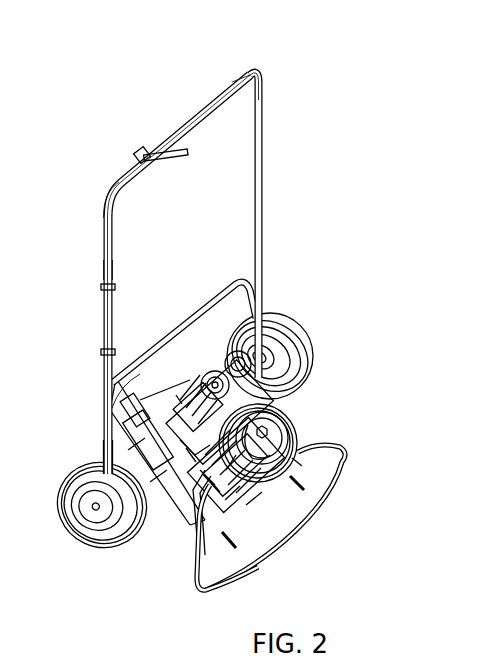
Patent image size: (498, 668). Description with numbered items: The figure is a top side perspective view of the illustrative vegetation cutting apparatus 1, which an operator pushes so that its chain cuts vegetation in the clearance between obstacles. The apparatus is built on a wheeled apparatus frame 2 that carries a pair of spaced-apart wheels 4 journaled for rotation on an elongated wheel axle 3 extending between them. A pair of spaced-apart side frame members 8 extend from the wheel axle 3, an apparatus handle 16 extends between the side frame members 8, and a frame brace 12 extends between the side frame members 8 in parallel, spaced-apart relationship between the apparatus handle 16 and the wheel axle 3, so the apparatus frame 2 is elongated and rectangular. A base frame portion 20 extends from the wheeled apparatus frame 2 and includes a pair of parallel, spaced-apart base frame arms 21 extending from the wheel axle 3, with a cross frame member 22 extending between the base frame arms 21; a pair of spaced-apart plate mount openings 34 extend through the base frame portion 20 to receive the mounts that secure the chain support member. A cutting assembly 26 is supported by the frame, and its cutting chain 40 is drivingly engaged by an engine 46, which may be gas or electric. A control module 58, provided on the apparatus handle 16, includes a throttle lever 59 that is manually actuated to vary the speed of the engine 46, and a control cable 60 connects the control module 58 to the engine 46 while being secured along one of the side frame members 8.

The vegetation cutting apparatus 1 is at (116, 130).
The wheeled apparatus frame 2 is at (102, 259).
The wheel axle 3 is at (103, 440).
The wheels 4 is at (62, 478).
The side frame members 8 is at (113, 310).
The frame brace 12 is at (200, 317).
The apparatus handle 16 is at (232, 82).
The base frame portion 20 is at (180, 509).
The base frame arms 21 is at (186, 395).
The cross frame member 22 is at (197, 553).
The cutting assembly 26 is at (322, 526).
The plate mount openings 34 is at (299, 487).
The cutting chain 40 is at (237, 584).
The engine 46 is at (297, 428).
The control module 58 is at (146, 150).
The throttle lever 59 is at (180, 163).
The control cable 60 is at (120, 192).